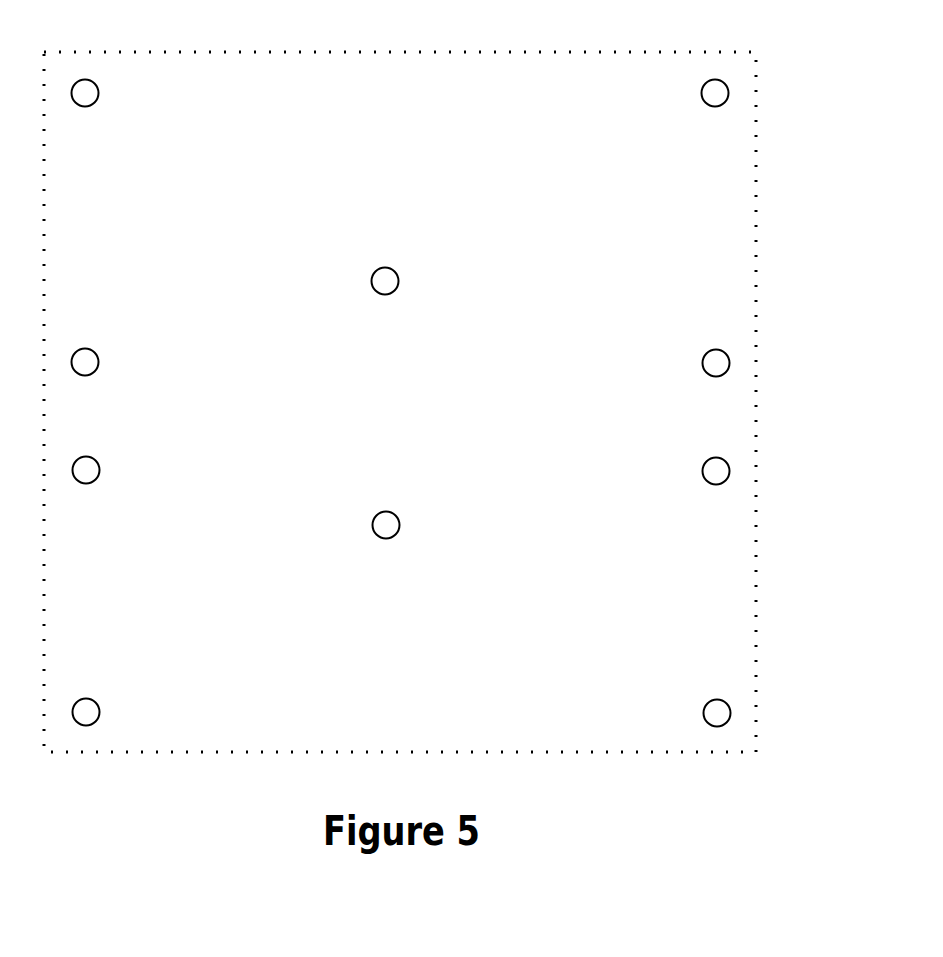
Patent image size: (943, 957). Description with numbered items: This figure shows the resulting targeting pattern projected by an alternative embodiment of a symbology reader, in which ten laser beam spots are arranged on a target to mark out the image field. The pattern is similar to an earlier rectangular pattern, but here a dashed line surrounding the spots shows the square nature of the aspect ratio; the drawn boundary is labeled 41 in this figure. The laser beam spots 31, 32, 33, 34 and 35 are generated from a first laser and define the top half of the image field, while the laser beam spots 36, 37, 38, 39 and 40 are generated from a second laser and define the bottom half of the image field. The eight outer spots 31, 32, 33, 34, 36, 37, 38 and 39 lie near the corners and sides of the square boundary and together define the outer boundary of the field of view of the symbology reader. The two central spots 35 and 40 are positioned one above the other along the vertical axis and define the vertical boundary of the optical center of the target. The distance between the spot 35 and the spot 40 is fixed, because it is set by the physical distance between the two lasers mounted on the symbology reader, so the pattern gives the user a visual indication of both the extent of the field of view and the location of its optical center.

The laser beam spot 31 is at (123, 67).
The laser beam spot 32 is at (680, 67).
The laser beam spot 33 is at (125, 445).
The laser beam spot 34 is at (681, 446).
The laser beam spot 35 is at (424, 259).
The laser beam spot 36 is at (125, 337).
The laser beam spot 37 is at (681, 338).
The laser beam spot 38 is at (126, 687).
The laser beam spot 39 is at (681, 687).
The laser beam spot 40 is at (424, 501).
The listening area boundary 41 is at (443, 402).